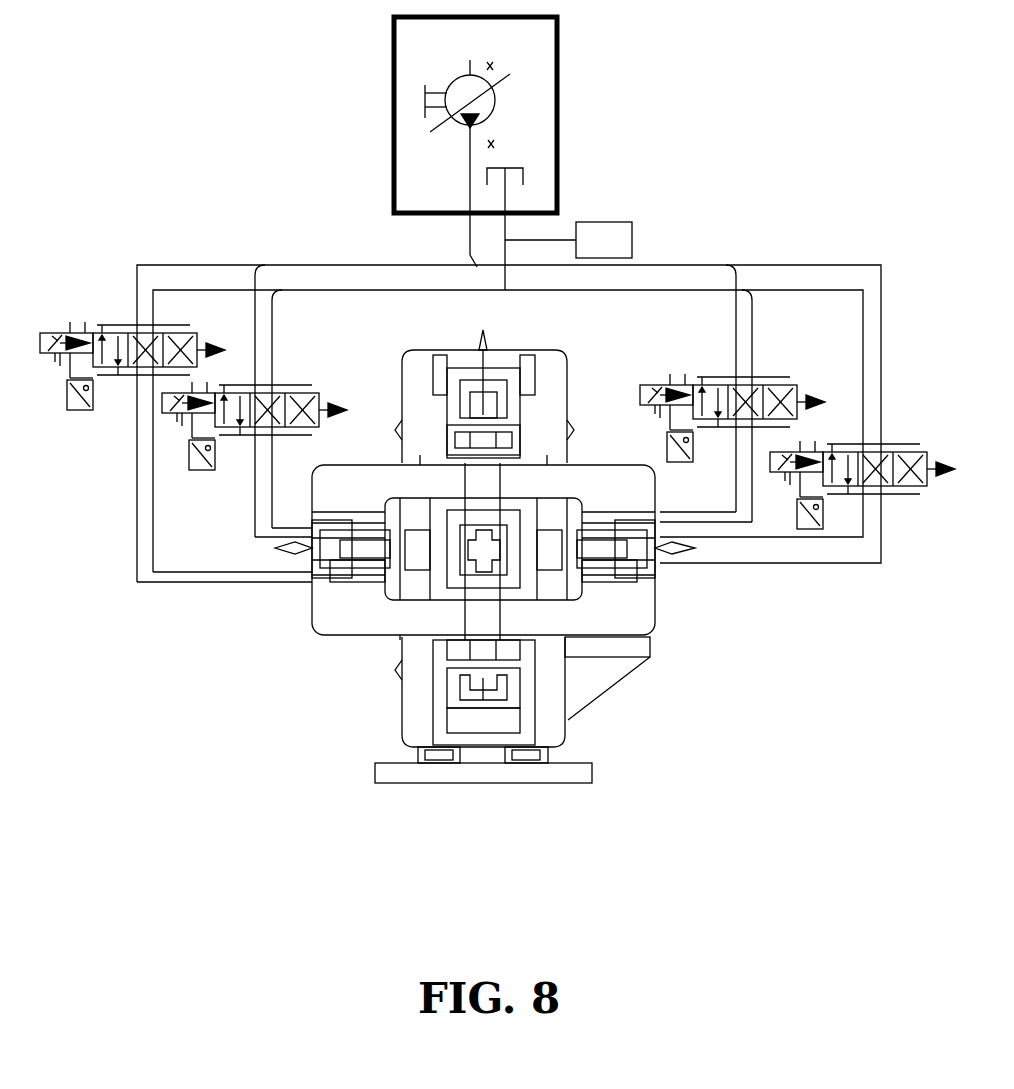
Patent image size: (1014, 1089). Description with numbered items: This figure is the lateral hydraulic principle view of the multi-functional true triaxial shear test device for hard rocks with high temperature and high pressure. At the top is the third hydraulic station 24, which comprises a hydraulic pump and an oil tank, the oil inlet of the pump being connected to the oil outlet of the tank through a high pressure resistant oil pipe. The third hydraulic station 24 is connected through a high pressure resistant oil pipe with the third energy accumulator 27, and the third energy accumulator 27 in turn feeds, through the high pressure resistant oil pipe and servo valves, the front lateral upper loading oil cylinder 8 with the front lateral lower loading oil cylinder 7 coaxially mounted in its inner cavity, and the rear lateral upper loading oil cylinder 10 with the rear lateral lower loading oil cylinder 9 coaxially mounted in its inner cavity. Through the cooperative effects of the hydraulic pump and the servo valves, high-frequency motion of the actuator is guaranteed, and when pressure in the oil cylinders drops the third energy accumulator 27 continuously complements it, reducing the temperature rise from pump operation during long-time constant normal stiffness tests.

The front lateral lower loading oil cylinder 7 is at (315, 555).
The front lateral upper loading oil cylinder 8 is at (312, 590).
The rear lateral lower loading oil cylinder 9 is at (668, 565).
The rear lateral upper loading oil cylinder 10 is at (655, 585).
The third hydraulic station 24 is at (558, 113).
The third energy accumulator 27 is at (604, 222).